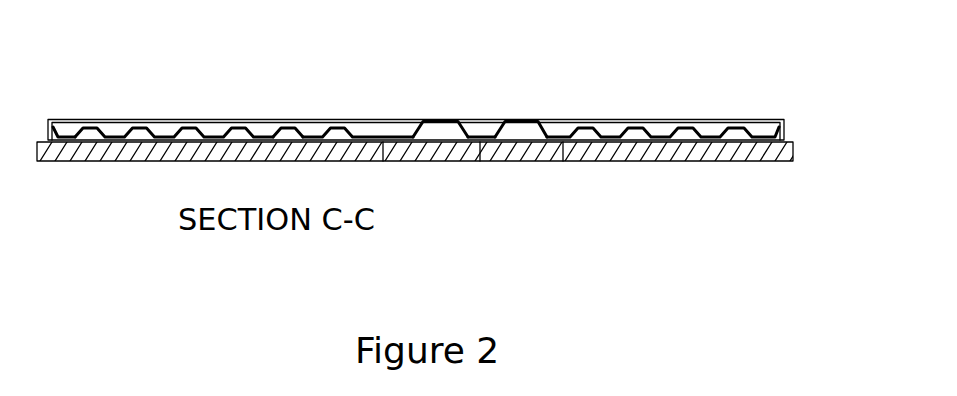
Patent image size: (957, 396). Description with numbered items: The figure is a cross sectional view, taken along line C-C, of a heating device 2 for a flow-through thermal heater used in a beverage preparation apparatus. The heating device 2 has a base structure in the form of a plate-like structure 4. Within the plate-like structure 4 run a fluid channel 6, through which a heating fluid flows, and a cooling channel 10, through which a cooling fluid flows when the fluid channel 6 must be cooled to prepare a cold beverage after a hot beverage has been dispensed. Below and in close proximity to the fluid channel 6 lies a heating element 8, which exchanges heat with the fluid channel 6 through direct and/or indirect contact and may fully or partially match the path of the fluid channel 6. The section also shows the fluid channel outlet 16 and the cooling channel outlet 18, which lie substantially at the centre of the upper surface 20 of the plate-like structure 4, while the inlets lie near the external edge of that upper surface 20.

The heating device 2 is at (130, 187).
The plate-like structure 4 is at (785, 129).
The fluid channel 6 is at (416, 147).
The heating element 8 is at (727, 150).
The cooling channel 10 is at (287, 128).
The fluid channel outlet 16 is at (435, 130).
The cooling channel outlet 18 is at (517, 132).
The upper surface 20 is at (63, 128).